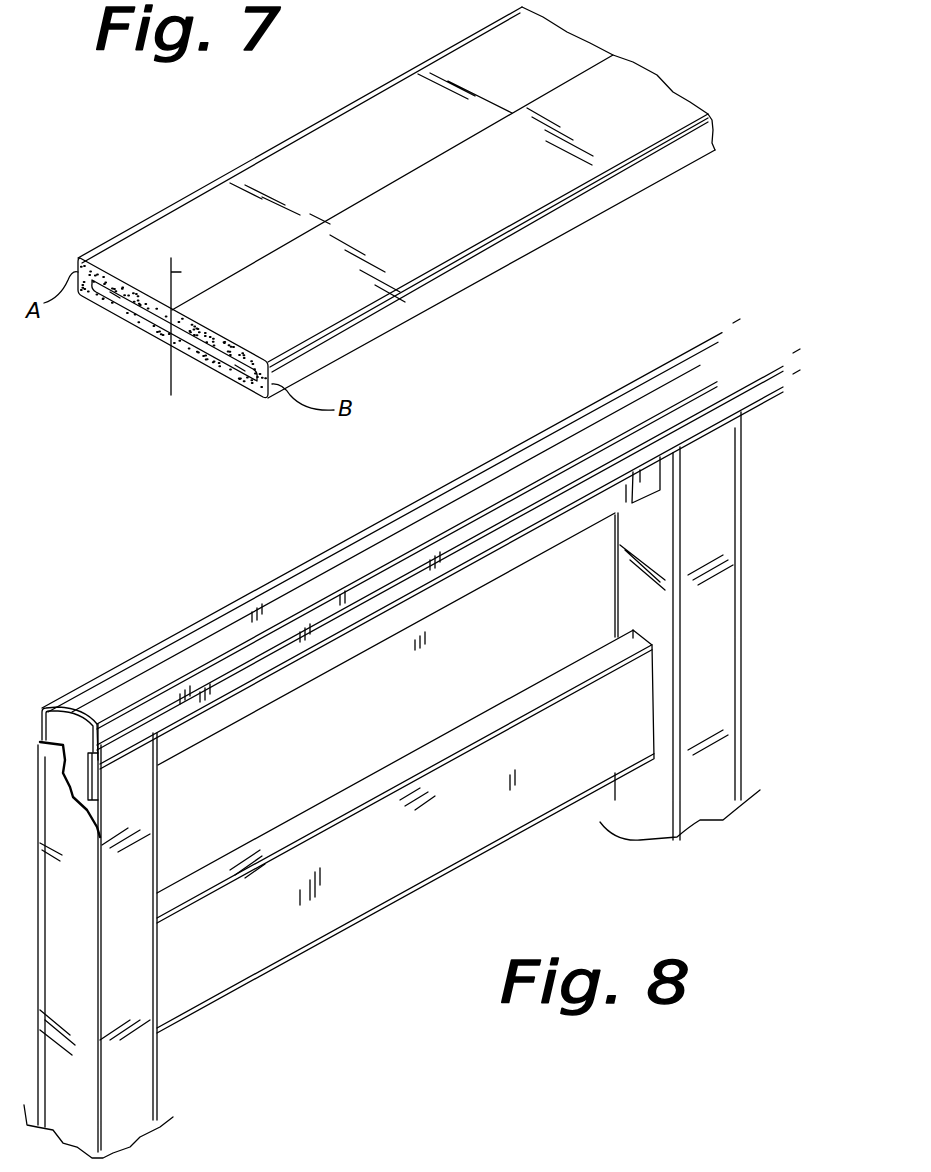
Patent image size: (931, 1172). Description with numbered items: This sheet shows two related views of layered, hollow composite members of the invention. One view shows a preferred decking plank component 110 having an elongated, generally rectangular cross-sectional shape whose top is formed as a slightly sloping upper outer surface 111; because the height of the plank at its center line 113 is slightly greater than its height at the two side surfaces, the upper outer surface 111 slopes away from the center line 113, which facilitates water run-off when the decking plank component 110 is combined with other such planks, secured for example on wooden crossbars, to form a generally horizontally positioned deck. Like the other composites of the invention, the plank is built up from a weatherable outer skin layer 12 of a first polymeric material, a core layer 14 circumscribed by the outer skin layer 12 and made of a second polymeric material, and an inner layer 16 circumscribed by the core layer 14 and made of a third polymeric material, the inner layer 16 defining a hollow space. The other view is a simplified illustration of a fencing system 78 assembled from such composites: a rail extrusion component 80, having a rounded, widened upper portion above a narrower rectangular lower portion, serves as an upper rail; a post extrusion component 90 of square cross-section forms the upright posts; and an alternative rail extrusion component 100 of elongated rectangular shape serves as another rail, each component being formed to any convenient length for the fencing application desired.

In FIG. 7, the outer skin layer 12 is at (400, 130).
In FIG. 8, the outer skin layer 12 is at (143, 655).
In FIG. 8, the core layer 14 is at (68, 735).
In FIG. 7, the inner layer 16 is at (220, 358).
In FIG. 8, the inner layer 16 is at (45, 745).
In FIG. 8, the fencing system 78 is at (322, 520).
In FIG. 8, the rail extrusion component 80 is at (287, 572).
In FIG. 8, the post extrusion component 90 is at (634, 594).
In FIG. 8, the alternative rail extrusion component 100 is at (380, 787).
In FIG. 7, the decking plank component 110 is at (68, 230).
In FIG. 7, the sloping upper outer surface 111 is at (197, 207).
In FIG. 7, the center line 113 is at (181, 272).